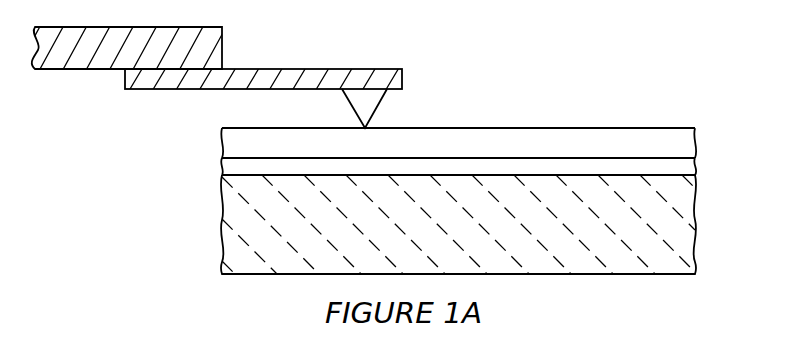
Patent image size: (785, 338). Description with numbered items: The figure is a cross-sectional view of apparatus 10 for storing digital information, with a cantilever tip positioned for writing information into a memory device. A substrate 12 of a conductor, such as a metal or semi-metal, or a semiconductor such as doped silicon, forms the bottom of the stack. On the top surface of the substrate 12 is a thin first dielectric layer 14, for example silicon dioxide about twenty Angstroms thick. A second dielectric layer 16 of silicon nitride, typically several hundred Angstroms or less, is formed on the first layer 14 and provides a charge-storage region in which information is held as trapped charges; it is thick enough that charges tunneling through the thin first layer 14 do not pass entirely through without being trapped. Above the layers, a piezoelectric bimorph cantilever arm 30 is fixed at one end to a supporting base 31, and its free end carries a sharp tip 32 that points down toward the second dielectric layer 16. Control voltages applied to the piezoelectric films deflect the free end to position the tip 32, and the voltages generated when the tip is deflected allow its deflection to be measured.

The apparatus 10 is at (488, 37).
The substrate 12 is at (222, 238).
The first dielectric layer 14 is at (222, 165).
The second dielectric layer 16 is at (222, 147).
The piezoelectric bimorph cantilever arm 30 is at (335, 69).
The supporting base 31 is at (222, 47).
The sharp tip 32 is at (378, 107).